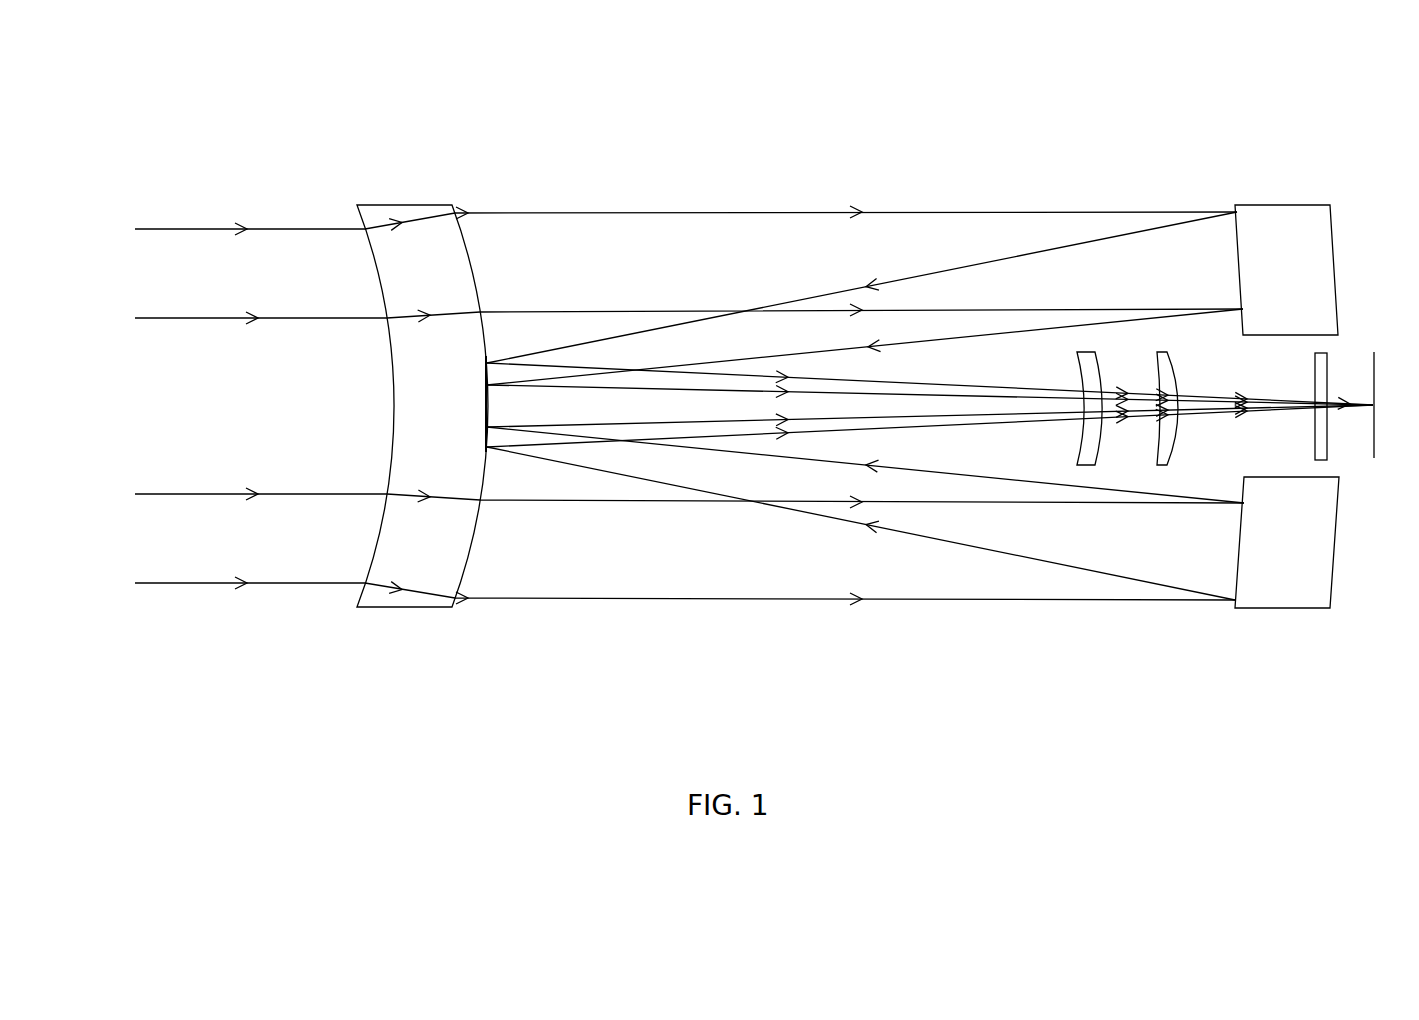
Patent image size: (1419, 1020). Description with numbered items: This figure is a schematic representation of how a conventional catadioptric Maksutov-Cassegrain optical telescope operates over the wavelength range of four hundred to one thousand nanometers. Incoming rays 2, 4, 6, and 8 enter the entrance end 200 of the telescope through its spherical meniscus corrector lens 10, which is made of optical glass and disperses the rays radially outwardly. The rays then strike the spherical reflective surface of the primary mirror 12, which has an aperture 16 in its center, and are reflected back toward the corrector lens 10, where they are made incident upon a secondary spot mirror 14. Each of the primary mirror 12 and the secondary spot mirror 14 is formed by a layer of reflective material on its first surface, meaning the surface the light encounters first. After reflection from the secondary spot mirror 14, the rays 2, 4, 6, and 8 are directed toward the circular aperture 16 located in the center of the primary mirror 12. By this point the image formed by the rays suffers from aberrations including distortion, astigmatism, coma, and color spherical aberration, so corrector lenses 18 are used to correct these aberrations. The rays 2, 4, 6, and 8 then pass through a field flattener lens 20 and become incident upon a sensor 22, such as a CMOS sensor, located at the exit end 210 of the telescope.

The incoming ray 2 is at (218, 228).
The incoming ray 4 is at (230, 317).
The incoming ray 6 is at (221, 493).
The incoming ray 8 is at (228, 582).
The spherical meniscus corrector lens 10 is at (455, 427).
The primary mirror 12 is at (1307, 295).
The secondary spot mirror 14 is at (487, 362).
The aperture 16 is at (1247, 360).
The corrector lenses 18 is at (1157, 347).
The field flattener lens 20 is at (1322, 462).
The sensor 22 is at (1374, 350).
The entrance end 200 is at (357, 175).
The exit end 210 is at (1280, 178).